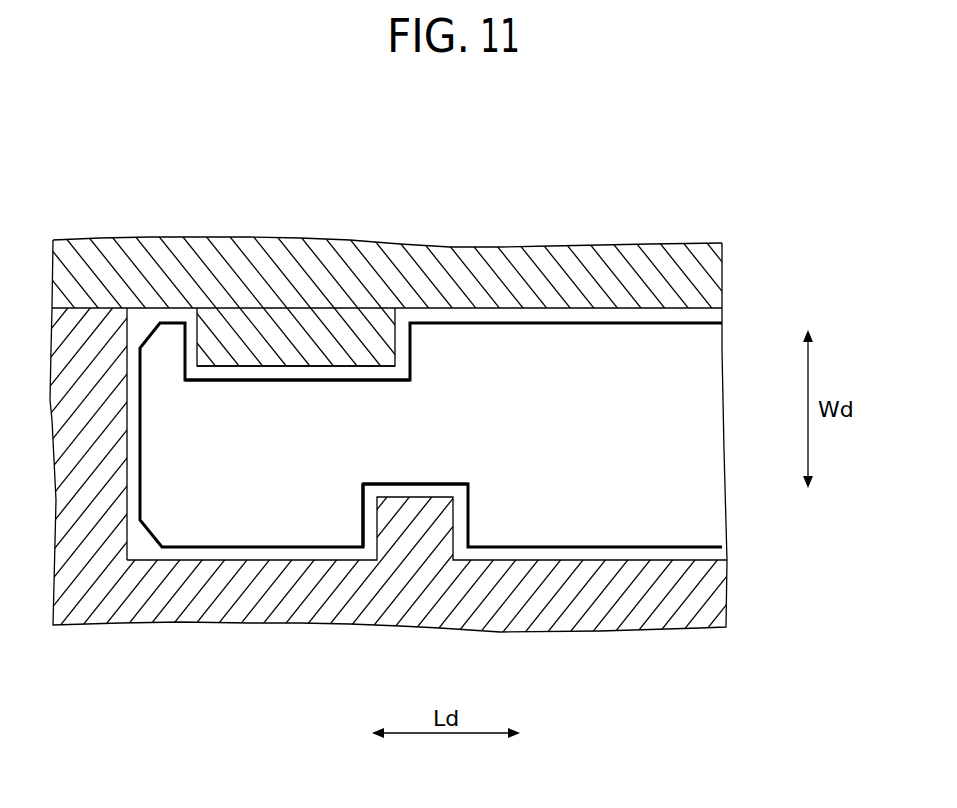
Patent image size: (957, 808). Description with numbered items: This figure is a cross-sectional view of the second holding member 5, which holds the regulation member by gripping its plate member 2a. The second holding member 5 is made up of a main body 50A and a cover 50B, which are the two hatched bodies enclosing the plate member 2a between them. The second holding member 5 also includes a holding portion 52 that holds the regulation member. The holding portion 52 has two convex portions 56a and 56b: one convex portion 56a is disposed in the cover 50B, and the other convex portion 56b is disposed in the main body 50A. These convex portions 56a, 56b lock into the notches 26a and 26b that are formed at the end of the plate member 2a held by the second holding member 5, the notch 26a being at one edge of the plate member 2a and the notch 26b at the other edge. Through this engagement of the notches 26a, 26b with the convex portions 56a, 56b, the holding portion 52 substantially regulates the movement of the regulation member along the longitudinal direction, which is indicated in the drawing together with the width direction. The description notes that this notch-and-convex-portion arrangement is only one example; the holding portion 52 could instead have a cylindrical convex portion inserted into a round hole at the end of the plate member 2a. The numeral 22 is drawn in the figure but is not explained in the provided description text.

The second holding member 5 is at (74, 126).
The main body 50A is at (182, 624).
The cover 50B is at (148, 238).
The holding portion 52 is at (246, 338).
The lining layer 22 is at (461, 312).
The plate member 2a is at (500, 381).
The convex portion 56a is at (322, 368).
The convex portion 56b is at (463, 502).
The notch 26a is at (365, 366).
The notch 26b is at (363, 508).